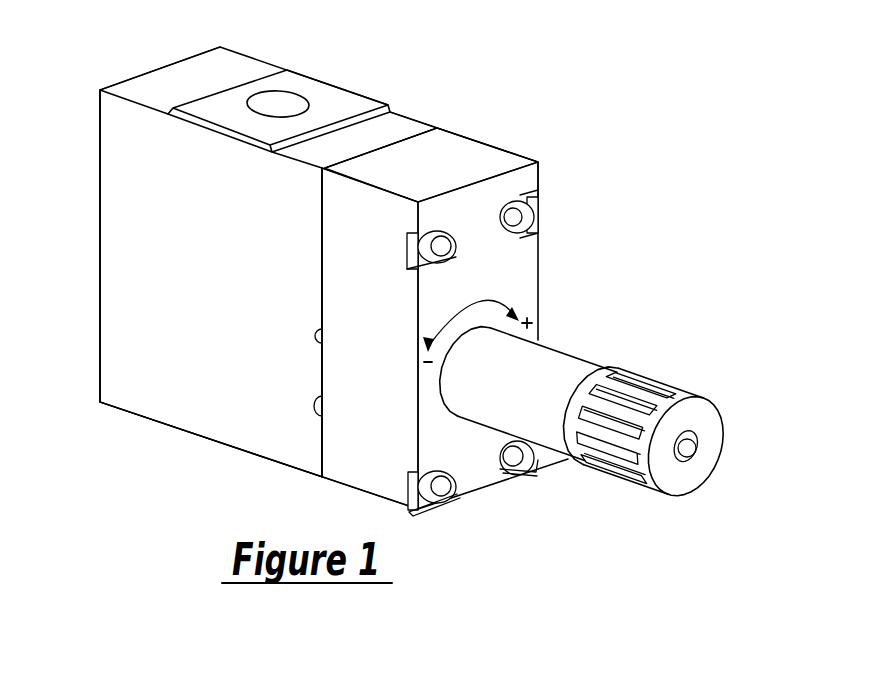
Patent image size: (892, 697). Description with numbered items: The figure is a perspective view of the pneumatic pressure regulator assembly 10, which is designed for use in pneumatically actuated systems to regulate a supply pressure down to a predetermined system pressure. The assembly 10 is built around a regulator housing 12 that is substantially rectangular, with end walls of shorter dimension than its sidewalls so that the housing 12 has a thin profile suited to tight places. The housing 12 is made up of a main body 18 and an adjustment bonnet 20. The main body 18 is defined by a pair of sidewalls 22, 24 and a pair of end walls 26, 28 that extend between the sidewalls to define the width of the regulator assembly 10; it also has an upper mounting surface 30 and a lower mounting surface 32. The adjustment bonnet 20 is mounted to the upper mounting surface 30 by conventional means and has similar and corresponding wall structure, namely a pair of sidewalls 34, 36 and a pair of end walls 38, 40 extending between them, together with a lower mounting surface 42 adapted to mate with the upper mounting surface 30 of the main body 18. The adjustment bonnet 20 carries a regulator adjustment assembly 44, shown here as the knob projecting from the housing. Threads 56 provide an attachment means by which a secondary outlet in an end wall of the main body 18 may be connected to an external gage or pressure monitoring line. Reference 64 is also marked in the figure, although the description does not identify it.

The pneumatic pressure regulator assembly 10 is at (414, 103).
The regulator housing 12 is at (507, 140).
The main body 18 is at (112, 384).
The adjustment bonnet 20 is at (528, 273).
The sidewall 22 is at (151, 170).
The sidewall 24 is at (256, 58).
The end wall 26 is at (198, 92).
The end wall 28 is at (180, 430).
The upper mounting surface 30 is at (320, 340).
The lower mounting surface 32 is at (100, 121).
The sidewall 34 is at (375, 252).
The sidewall 36 is at (538, 175).
The end wall 38 is at (447, 177).
The end wall 40 is at (480, 497).
The lower mounting surface 42 is at (323, 414).
The regulator adjustment assembly 44 is at (632, 369).
The threads 56 is at (664, 391).
The center indicator 64 is at (687, 448).